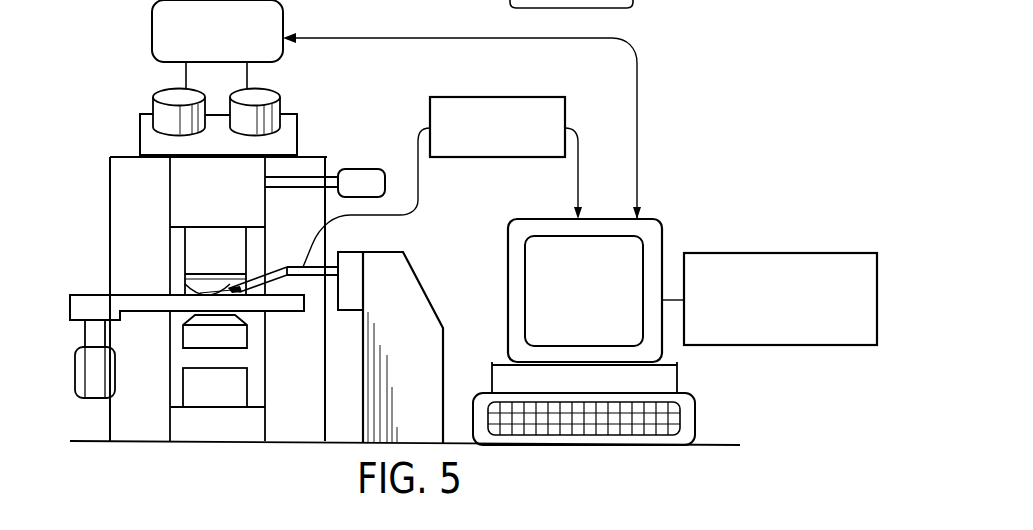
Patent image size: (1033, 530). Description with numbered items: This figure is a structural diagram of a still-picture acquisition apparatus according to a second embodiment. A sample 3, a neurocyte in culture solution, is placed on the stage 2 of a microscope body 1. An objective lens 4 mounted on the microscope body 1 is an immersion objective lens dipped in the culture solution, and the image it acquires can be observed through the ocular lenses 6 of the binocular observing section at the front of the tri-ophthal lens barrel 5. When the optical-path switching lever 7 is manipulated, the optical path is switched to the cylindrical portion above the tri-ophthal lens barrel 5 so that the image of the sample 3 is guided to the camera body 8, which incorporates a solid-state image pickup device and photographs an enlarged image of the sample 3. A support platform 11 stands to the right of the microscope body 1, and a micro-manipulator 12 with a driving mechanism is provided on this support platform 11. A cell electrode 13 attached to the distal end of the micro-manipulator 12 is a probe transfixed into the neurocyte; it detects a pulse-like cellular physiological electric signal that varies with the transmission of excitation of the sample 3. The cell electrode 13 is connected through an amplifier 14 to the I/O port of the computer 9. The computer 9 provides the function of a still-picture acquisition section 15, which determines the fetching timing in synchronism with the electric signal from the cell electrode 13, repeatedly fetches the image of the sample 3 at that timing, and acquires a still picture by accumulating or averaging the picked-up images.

The microscope body 1 is at (118, 160).
The stage 2 is at (84, 295).
The sample 3 is at (185, 292).
The objective lens 4 is at (195, 238).
The tri-ophthal lens barrel 5 is at (140, 117).
The ocular lenses 6 is at (275, 90).
The optical-path switching lever 7 is at (365, 169).
The camera body 8 is at (152, 25).
The computer 9 is at (595, 219).
The support platform 11 is at (423, 280).
The micro-manipulator 12 is at (355, 252).
The cell electrode 13 is at (285, 267).
The amplifier 14 is at (500, 97).
The still-picture acquisition section 15 is at (726, 253).